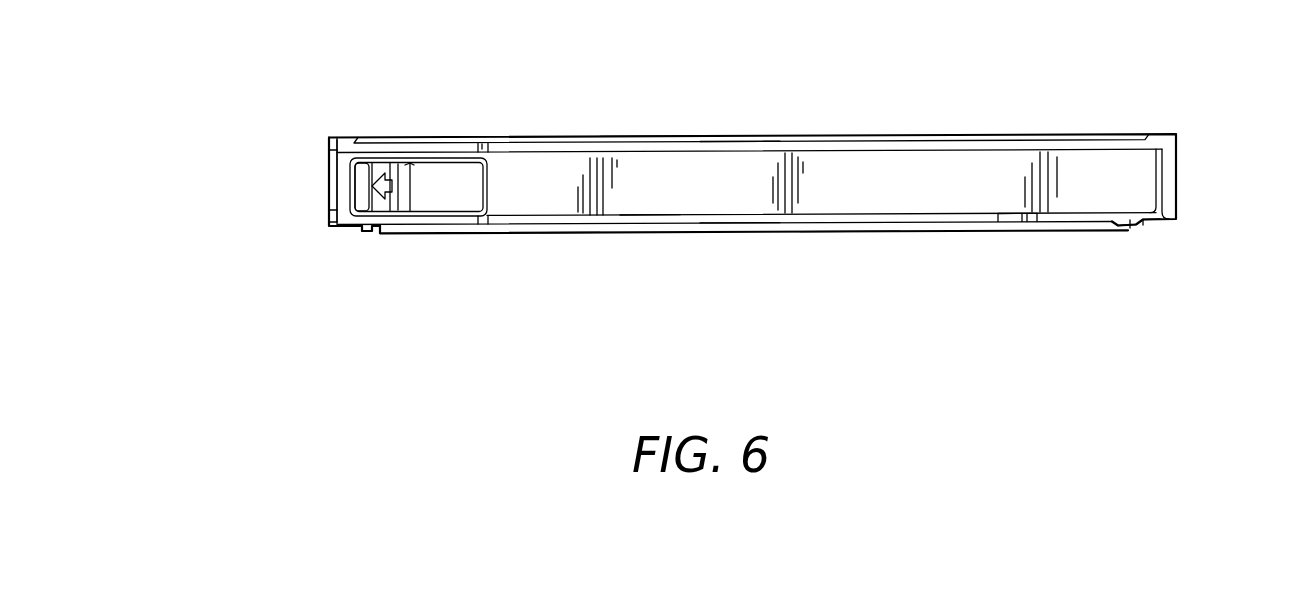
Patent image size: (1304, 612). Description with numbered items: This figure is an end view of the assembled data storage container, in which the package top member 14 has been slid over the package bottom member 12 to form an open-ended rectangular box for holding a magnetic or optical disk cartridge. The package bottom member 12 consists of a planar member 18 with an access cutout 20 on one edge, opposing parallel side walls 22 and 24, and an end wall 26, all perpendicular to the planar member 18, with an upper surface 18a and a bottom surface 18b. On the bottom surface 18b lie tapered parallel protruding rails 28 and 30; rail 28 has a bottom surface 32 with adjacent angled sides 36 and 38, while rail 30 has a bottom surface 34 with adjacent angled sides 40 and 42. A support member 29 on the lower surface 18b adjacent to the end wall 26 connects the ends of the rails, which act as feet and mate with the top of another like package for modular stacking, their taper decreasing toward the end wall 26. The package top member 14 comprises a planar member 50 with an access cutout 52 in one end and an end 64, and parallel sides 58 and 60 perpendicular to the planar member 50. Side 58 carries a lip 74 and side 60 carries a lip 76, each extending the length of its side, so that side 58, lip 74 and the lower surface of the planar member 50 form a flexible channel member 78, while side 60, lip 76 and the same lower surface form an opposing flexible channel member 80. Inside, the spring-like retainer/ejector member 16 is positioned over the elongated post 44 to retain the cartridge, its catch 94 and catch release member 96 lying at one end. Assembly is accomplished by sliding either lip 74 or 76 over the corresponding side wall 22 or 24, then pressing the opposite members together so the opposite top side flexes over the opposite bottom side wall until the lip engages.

The package bottom member 12 is at (453, 233).
The package top member 14 is at (421, 137).
The disk retainer/ejector member 16 is at (487, 188).
The planar member 18 is at (740, 217).
The inner bottom surface 18a is at (848, 212).
The bottom surface 18b is at (845, 232).
The access cutout 20 is at (648, 217).
The side wall 22 is at (338, 168).
The side wall 24 is at (1152, 177).
The end wall 26 is at (720, 197).
The tapered parallel protruding rail 28 is at (370, 229).
The support member 29 is at (568, 233).
The tapered parallel protruding rail 30 is at (1128, 224).
The bottom surface 32 is at (377, 233).
The bottom surface 34 is at (1142, 224).
The angled side 36 is at (358, 228).
The angled side 38 is at (385, 233).
The angled side 40 is at (1113, 222).
The angled side 42 is at (1143, 222).
The elongated post 44 is at (382, 173).
The planar member 50 is at (807, 147).
The access cutout 52 is at (743, 147).
The parallel side 58 is at (342, 172).
The parallel side 60 is at (1178, 152).
The end 64 is at (648, 137).
The lip 74 is at (334, 222).
The lip 76 is at (1178, 213).
The flexible channel member 78 is at (318, 188).
The flexible channel member 80 is at (1188, 182).
The catch 94 is at (410, 187).
The catch release member 96 is at (360, 193).